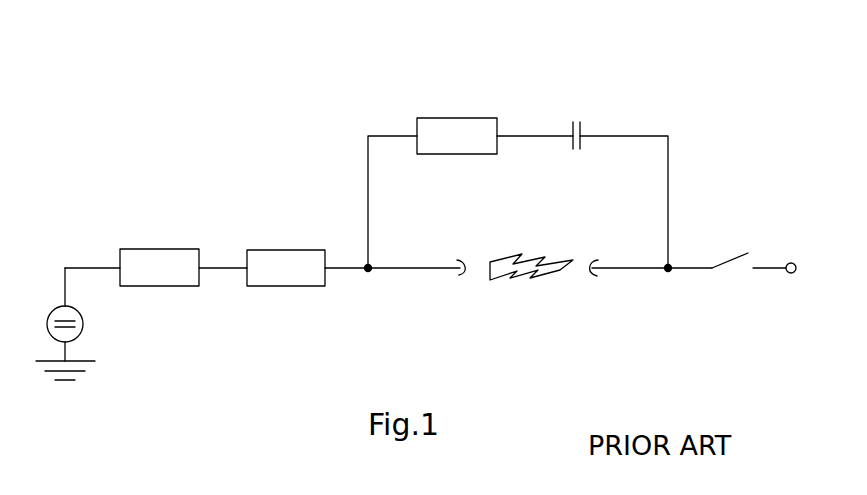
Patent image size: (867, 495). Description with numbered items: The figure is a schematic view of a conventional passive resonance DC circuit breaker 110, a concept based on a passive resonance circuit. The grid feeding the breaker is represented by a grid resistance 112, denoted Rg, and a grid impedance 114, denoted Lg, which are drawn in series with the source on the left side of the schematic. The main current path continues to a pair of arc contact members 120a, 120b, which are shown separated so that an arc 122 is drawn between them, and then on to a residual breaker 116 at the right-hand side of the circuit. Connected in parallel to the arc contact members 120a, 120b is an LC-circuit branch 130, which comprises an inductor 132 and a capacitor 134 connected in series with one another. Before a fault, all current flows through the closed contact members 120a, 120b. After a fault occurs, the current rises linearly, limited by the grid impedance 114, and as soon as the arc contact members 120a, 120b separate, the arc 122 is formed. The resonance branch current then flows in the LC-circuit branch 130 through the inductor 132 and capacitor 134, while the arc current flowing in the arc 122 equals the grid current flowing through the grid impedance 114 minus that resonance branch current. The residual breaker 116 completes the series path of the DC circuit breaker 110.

The DC circuit breaker 110 is at (190, 86).
The grid resistance 112 is at (146, 249).
The grid impedance 114 is at (260, 250).
The residual breaker 116 is at (748, 253).
The arc contact member 120a is at (460, 275).
The arc contact member 120b is at (597, 277).
The arc 122 is at (521, 282).
The LC-circuit branch 130 is at (368, 183).
The inductor 132 is at (440, 118).
The capacitor 134 is at (583, 127).